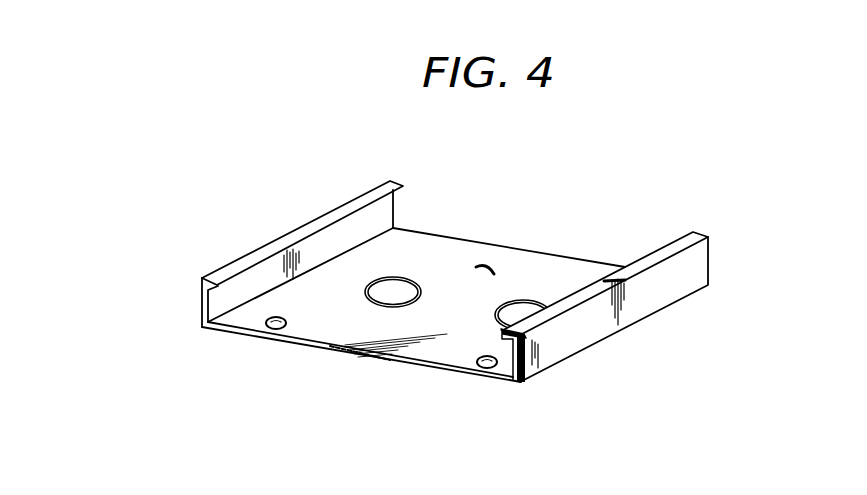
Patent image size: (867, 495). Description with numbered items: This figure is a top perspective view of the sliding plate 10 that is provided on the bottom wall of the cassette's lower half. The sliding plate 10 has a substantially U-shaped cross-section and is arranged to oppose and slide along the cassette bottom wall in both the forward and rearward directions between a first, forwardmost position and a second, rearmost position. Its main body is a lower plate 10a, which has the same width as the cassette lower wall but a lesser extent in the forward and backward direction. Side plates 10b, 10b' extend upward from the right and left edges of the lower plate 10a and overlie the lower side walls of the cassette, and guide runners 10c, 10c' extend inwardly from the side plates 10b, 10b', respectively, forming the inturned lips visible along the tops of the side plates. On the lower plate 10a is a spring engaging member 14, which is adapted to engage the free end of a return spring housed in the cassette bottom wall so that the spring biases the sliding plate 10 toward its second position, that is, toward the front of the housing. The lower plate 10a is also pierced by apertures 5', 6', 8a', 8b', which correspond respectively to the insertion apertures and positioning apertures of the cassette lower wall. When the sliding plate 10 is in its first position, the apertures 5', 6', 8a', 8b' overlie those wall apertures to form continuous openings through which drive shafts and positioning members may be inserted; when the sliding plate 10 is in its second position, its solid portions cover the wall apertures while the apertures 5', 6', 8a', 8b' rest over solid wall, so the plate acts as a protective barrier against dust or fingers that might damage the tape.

The sliding plate 10 is at (485, 188).
The lower plate 10a is at (528, 258).
The side plate 10b is at (612, 311).
The side plate 10b' is at (263, 256).
The guide runner 10c is at (613, 256).
The guide runner 10c' is at (308, 210).
The aperture 5' is at (400, 249).
The aperture 6' is at (552, 272).
The aperture 8a' is at (264, 353).
The aperture 8b' is at (479, 389).
The spring engaging member 14 is at (490, 262).